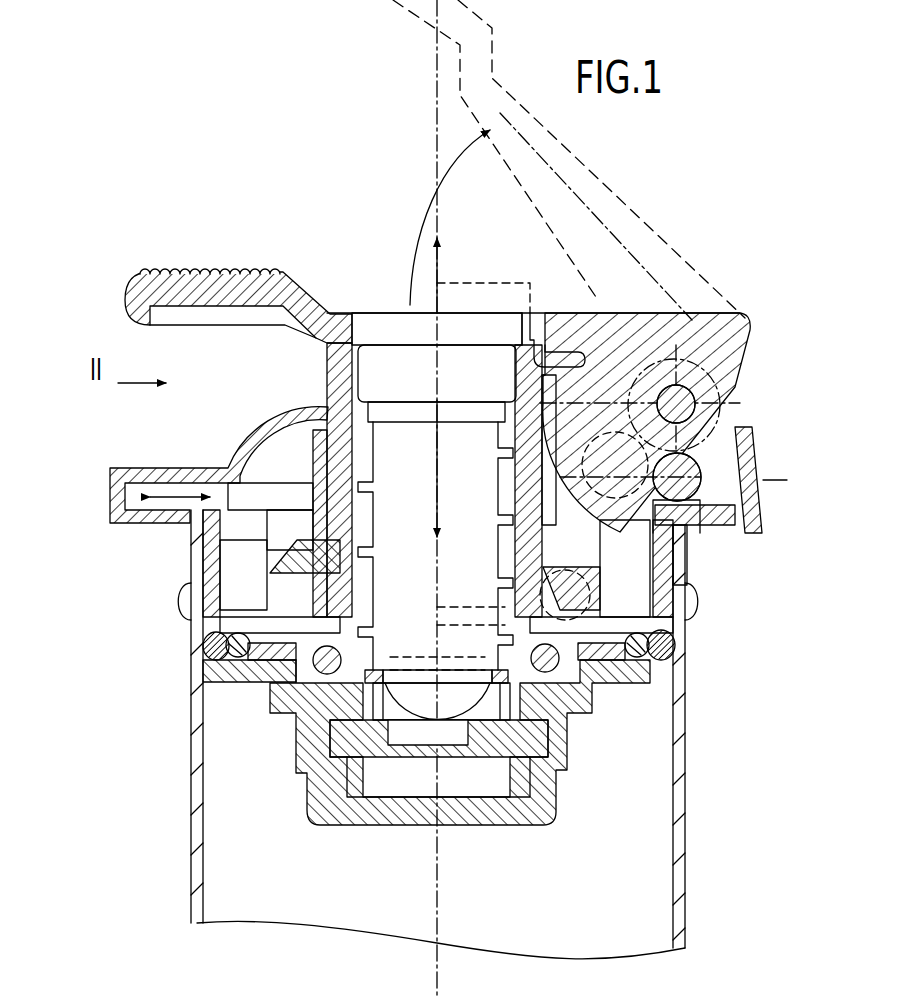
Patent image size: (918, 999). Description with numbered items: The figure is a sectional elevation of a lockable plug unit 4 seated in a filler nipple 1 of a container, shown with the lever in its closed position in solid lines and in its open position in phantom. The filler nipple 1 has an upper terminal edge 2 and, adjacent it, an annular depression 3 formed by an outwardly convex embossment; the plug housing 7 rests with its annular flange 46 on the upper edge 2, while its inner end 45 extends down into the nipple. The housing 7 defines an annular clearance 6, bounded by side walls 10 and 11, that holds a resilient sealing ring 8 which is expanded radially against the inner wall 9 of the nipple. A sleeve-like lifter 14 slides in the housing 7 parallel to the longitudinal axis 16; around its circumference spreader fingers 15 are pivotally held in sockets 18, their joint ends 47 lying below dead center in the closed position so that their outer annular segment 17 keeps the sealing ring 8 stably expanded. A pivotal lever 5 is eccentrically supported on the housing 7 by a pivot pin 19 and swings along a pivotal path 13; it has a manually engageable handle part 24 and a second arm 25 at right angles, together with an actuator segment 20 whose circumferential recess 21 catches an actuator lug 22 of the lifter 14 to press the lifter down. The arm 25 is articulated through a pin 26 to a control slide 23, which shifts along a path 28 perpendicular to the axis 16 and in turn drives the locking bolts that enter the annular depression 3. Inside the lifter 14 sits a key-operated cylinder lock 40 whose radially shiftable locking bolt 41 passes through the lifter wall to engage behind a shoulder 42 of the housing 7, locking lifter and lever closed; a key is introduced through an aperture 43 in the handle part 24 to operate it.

The filler nipple 1 is at (680, 722).
The upper terminal edge 2 is at (683, 546).
The annular depression 3 is at (186, 597).
The plug unit 4 is at (498, 266).
The pivotal lever 5 is at (330, 308).
The annular clearance 6 is at (262, 626).
The plug housing 7 is at (160, 463).
The sealing ring 8 is at (672, 648).
The inner wall 9 is at (197, 792).
The side wall 10 is at (215, 657).
The side wall 11 is at (236, 643).
The pivotal path 13 is at (432, 212).
The lifter 14 is at (352, 393).
The spreader fingers 15 is at (265, 663).
The longitudinal axis 16 is at (453, 303).
The annular segment 17 is at (245, 650).
The sockets 18 is at (330, 650).
The pivot pin 19 is at (678, 400).
The actuator segment 20 is at (590, 447).
The recess 21 is at (553, 410).
The actuator lug 22 is at (547, 362).
The control slide 23 is at (290, 495).
The handle part 24 is at (240, 290).
The arm 25 is at (700, 437).
The pin 26 is at (700, 487).
The shifting path 28 is at (192, 492).
The cylinder lock 40 is at (420, 433).
The locking bolt 41 is at (540, 747).
The shoulder 42 is at (322, 702).
The aperture 43 is at (390, 325).
The inner end 45 is at (420, 815).
The annular flange 46 is at (712, 515).
The joint end 47 is at (343, 658).